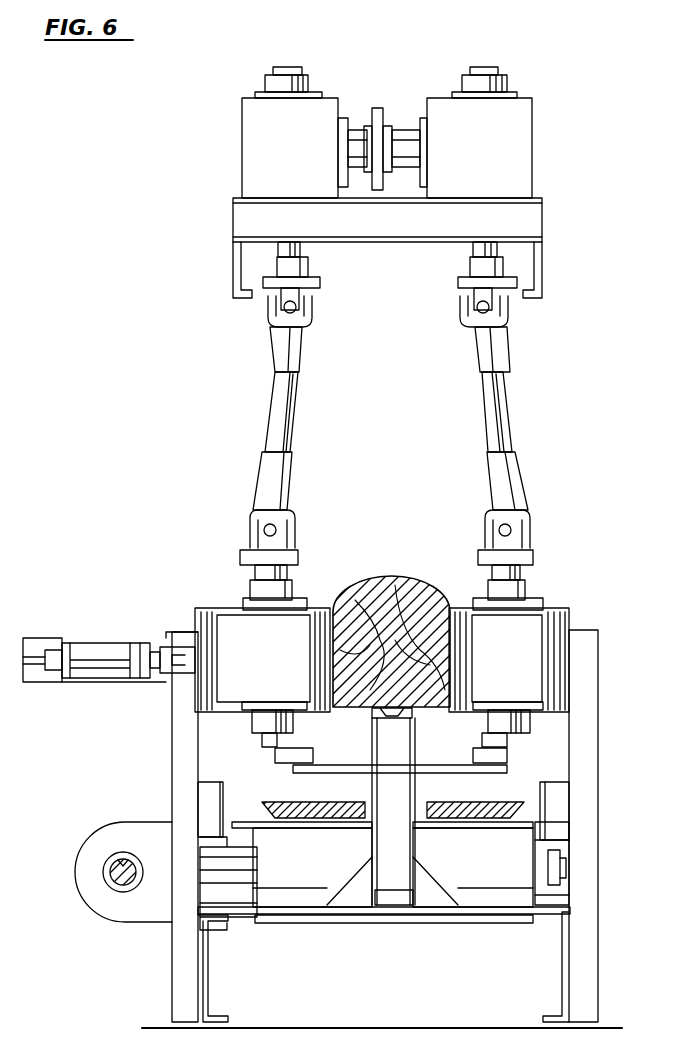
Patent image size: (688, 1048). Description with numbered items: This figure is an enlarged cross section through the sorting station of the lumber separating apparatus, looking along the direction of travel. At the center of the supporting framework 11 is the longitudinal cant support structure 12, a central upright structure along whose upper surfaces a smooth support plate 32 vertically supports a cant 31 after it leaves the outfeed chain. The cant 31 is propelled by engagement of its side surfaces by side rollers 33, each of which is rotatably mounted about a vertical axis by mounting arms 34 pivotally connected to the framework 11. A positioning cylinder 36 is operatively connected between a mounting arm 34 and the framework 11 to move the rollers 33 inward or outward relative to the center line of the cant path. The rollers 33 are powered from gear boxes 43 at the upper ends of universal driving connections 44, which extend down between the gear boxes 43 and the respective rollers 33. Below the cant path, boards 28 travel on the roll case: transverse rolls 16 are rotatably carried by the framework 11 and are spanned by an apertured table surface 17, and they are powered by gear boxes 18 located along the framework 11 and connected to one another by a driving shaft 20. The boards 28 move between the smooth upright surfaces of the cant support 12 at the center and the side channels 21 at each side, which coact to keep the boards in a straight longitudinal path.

The supporting framework 11 is at (606, 915).
The longitudinal cant support structure 12 is at (415, 745).
The transverse rolls 16 is at (318, 875).
The table surface 17 is at (242, 822).
The gear boxes 18 is at (162, 917).
The driving shaft 20 is at (125, 860).
The side channels 21 is at (218, 782).
The boards 28 is at (350, 805).
The cant 31 is at (389, 578).
The support plate 32 is at (372, 722).
The side rollers 33 is at (279, 672).
The mounting arms 34 is at (225, 608).
The positioning cylinders 36 is at (93, 650).
The gear boxes 43 is at (297, 167).
The universal driving connections 44 is at (297, 418).